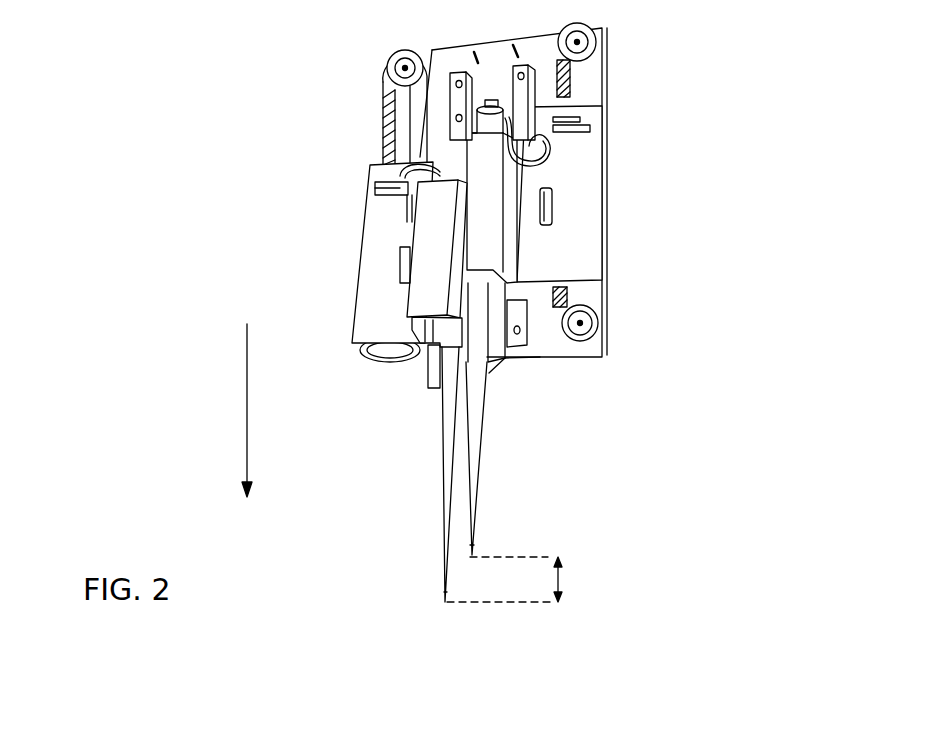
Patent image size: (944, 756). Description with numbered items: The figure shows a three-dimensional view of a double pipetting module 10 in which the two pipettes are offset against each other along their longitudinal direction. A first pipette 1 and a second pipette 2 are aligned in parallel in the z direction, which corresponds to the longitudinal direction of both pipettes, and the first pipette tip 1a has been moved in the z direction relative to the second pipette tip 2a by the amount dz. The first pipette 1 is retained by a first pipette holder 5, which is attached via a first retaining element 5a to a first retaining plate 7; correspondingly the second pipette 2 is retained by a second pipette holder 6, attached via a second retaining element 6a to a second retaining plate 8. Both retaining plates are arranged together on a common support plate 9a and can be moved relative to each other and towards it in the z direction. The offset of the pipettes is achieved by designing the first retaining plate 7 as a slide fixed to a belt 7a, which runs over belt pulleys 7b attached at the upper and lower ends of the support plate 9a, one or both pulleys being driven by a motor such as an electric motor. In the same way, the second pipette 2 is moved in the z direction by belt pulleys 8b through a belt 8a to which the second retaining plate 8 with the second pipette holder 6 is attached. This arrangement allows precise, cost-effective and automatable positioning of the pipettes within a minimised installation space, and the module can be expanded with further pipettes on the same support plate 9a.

The double pipetting module 10 is at (267, 163).
The first pipette 1 is at (447, 527).
The first pipette tip 1a is at (443, 600).
The second pipette 2 is at (480, 492).
The second pipette tip 2a is at (473, 553).
The first pipette holder 5 is at (453, 400).
The first retaining element 5a is at (432, 232).
The second pipette holder 6 is at (480, 392).
The second retaining element 6a is at (490, 242).
The first retaining plate 7 is at (385, 300).
The belt 7a is at (385, 119).
The belt pulleys 7b is at (388, 63).
The second retaining plate 8 is at (582, 198).
The belt 8a is at (607, 80).
The belt pulleys 8b is at (607, 35).
The support plate 9a is at (500, 62).
The z direction z is at (232, 410).
The offset amount dz is at (532, 579).